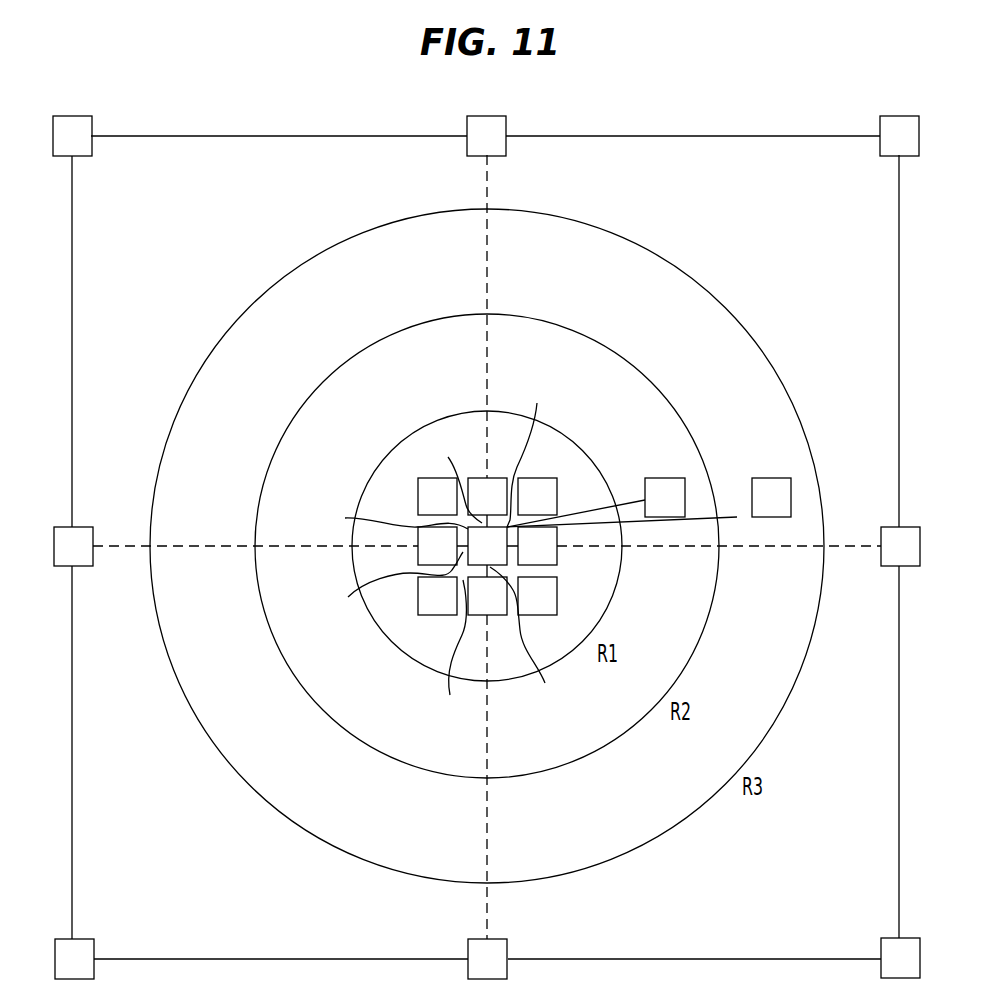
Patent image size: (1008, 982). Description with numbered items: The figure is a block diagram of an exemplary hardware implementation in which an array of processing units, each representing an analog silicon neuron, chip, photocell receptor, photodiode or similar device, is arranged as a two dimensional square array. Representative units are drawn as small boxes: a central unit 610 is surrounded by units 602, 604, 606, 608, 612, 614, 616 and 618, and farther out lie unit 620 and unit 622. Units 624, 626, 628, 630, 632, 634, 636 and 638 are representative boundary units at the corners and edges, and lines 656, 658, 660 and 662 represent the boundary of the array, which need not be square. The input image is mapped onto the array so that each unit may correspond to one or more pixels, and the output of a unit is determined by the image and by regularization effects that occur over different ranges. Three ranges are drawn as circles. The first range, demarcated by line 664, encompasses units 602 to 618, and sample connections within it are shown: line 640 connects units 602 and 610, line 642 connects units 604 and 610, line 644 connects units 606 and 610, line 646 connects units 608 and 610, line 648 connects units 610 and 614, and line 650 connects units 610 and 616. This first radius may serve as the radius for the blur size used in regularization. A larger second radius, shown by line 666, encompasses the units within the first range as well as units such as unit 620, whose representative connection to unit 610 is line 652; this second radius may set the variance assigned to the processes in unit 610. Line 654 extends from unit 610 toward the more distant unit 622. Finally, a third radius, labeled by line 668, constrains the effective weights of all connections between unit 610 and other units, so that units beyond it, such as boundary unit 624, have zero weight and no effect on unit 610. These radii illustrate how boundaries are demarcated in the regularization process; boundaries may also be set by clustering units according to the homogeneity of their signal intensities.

The unit 602 is at (437, 496).
The unit 604 is at (487, 496).
The unit 606 is at (537, 496).
The unit 608 is at (437, 546).
The unit 610 is at (487, 546).
The unit 612 is at (537, 546).
The unit 614 is at (437, 596).
The unit 616 is at (487, 596).
The unit 618 is at (537, 596).
The unit 620 is at (665, 497).
The unit 622 is at (771, 497).
The boundary unit 624 is at (72, 136).
The boundary unit 626 is at (486, 136).
The boundary unit 628 is at (899, 136).
The boundary unit 630 is at (900, 546).
The boundary unit 632 is at (900, 958).
The boundary unit 634 is at (487, 959).
The boundary unit 636 is at (74, 959).
The boundary unit 638 is at (73, 546).
The line 640 is at (387, 520).
The line 642 is at (457, 475).
The line 644 is at (532, 451).
The line 646 is at (387, 583).
The line 648 is at (455, 654).
The line 650 is at (531, 640).
The line 652 is at (628, 503).
The line 654 is at (736, 517).
The line 656 is at (226, 136).
The line 658 is at (748, 136).
The line 660 is at (899, 266).
The line 662 is at (899, 857).
The line 664 is at (613, 595).
The line 666 is at (705, 628).
The line 668 is at (777, 727).